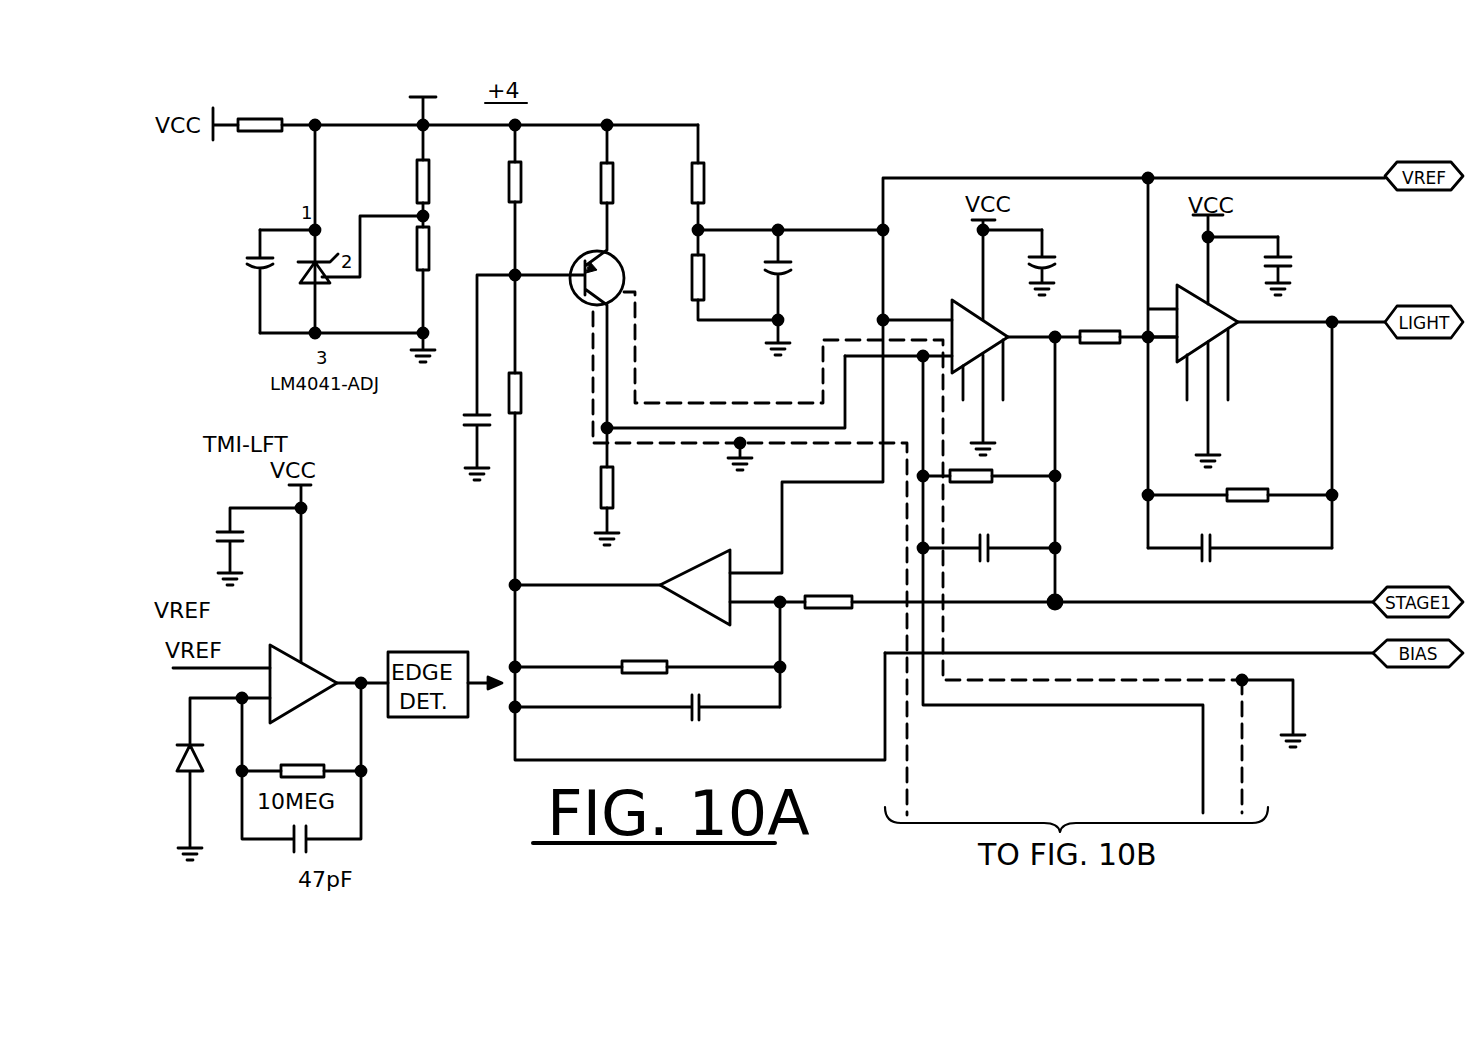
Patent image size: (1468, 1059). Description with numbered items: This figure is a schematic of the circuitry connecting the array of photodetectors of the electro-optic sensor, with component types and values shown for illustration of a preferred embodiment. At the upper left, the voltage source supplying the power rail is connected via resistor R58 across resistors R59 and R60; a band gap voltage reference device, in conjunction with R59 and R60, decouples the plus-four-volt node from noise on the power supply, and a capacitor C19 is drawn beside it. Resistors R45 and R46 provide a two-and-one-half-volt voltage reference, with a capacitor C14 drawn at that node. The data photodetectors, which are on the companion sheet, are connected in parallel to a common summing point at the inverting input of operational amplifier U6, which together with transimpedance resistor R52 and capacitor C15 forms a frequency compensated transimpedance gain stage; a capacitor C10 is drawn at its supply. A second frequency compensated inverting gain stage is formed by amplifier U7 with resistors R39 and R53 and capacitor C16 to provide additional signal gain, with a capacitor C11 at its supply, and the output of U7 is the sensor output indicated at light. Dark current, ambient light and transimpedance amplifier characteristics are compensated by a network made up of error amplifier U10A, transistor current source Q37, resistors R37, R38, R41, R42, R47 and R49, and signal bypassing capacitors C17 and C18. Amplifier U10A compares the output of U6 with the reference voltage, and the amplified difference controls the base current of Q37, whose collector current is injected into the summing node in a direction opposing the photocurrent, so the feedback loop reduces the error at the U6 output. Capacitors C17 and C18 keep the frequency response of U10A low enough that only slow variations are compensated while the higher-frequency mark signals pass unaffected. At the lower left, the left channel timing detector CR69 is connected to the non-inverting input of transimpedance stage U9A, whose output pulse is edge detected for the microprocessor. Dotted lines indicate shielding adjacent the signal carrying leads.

The resistor R58 is at (259, 124).
The capacitor C19 is at (213, 295).
The resistor R59 is at (448, 183).
The resistor R60 is at (448, 240).
The resistor R41 is at (538, 180).
The resistor R38 is at (539, 385).
The signal bypassing capacitor C18 is at (445, 377).
The resistor R37 is at (632, 180).
The transistor current source Q37 is at (569, 335).
The resistor R42 is at (648, 487).
The resistor R45 is at (722, 180).
The resistor R46 is at (671, 267).
The capacitor C14 is at (814, 292).
The operational amplifier U6 is at (966, 342).
The capacitor C10 is at (1085, 262).
The resistor R39 is at (1102, 337).
The transimpedance resistor R52 is at (989, 499).
The capacitor C15 is at (989, 561).
The operational amplifier U7 is at (1227, 352).
The capacitor C11 is at (1312, 258).
The resistor R53 is at (1240, 498).
The capacitor C16 is at (1240, 564).
The error amplifier U10A is at (695, 565).
The resistor R49 is at (828, 602).
The resistor R47 is at (647, 641).
The signal bypassing capacitor C17 is at (647, 707).
The transimpedance stage U9A is at (317, 665).
The left channel detector CR69 is at (169, 802).